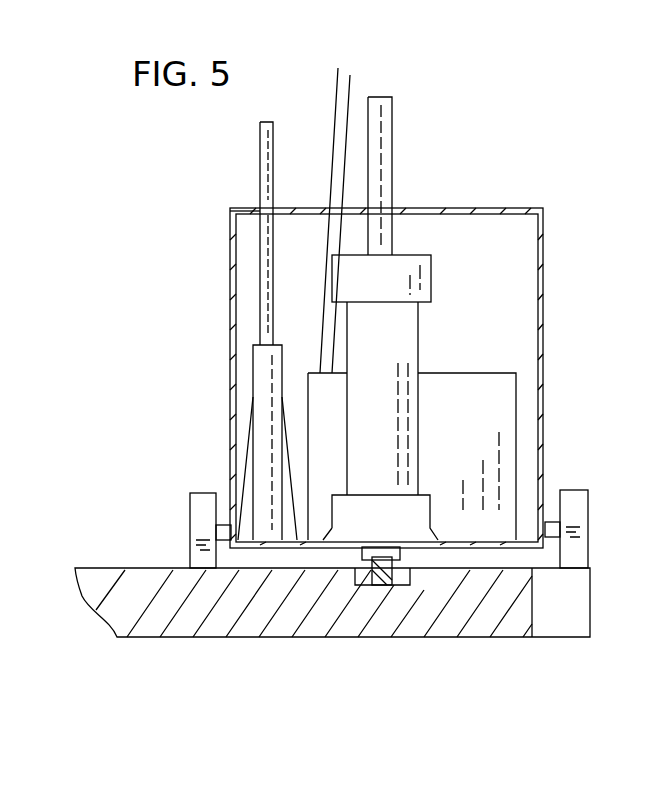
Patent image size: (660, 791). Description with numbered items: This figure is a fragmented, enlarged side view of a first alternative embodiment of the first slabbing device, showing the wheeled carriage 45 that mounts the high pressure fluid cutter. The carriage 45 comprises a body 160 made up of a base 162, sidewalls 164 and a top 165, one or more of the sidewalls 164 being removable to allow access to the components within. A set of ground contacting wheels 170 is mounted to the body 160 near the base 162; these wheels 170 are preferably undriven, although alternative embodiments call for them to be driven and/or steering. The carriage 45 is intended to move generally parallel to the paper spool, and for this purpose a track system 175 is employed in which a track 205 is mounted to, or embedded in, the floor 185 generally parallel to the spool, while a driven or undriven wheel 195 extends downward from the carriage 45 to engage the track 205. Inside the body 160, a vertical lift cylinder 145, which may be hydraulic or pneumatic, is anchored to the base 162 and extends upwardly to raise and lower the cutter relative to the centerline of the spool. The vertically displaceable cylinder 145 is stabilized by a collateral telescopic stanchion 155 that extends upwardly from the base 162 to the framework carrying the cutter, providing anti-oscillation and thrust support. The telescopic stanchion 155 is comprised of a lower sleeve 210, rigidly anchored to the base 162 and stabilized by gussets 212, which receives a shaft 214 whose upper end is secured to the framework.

The wheeled carriage 45 is at (245, 205).
The vertical lift cylinder 145 is at (402, 253).
The telescopic stanchion 155 is at (257, 278).
The body 160 is at (225, 438).
The base 162 is at (475, 547).
The sidewall 164 is at (235, 482).
The top 165 is at (457, 212).
The ground contacting wheel 170 is at (197, 528).
The track system 175 is at (413, 590).
The floor 185 is at (515, 615).
The wheel 195 is at (392, 560).
The track 205 is at (373, 560).
The lower sleeve 210 is at (263, 383).
The gusset 212 is at (250, 518).
The shaft 214 is at (262, 125).